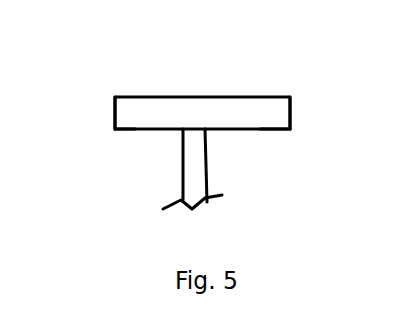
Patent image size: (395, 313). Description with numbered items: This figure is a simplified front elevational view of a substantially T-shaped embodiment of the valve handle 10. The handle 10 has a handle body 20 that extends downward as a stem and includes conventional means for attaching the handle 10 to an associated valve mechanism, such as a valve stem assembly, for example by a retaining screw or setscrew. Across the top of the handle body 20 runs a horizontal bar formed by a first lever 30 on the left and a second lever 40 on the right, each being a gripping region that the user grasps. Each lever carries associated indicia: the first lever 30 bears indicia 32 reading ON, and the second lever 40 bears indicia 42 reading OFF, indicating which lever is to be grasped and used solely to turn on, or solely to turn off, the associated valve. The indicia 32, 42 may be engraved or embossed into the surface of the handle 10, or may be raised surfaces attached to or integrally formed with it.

The handle 10 is at (224, 48).
The handle body 20 is at (183, 170).
The first lever 30 is at (140, 97).
The indicia 32 is at (133, 129).
The second lever 40 is at (255, 97).
The indicia 42 is at (260, 129).